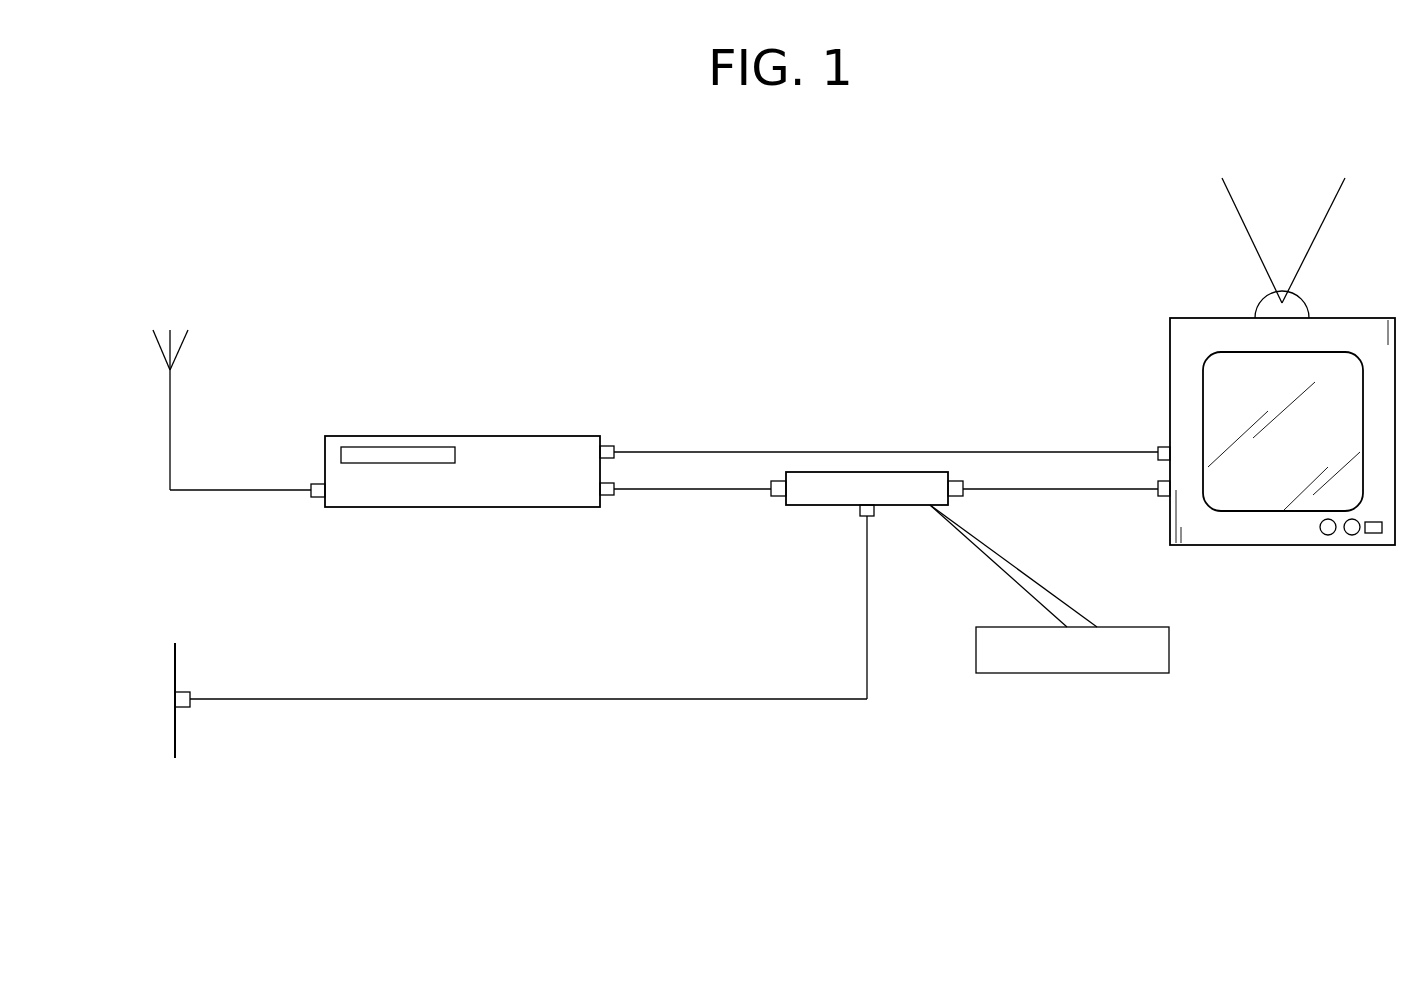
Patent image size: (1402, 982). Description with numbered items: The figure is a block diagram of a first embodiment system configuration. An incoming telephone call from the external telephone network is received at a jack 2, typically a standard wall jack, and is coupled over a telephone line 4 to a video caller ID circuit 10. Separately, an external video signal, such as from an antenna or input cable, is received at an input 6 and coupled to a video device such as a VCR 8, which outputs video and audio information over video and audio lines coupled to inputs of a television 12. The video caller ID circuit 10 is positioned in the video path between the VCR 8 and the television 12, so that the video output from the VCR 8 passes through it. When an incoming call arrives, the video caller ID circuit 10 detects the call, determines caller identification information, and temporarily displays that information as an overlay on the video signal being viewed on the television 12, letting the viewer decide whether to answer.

The jack 2 is at (186, 708).
The telephone line 4 is at (282, 700).
The input 6 is at (170, 370).
The VCR 8 is at (481, 437).
The video caller ID circuit 10 is at (826, 506).
The television 12 is at (1170, 334).